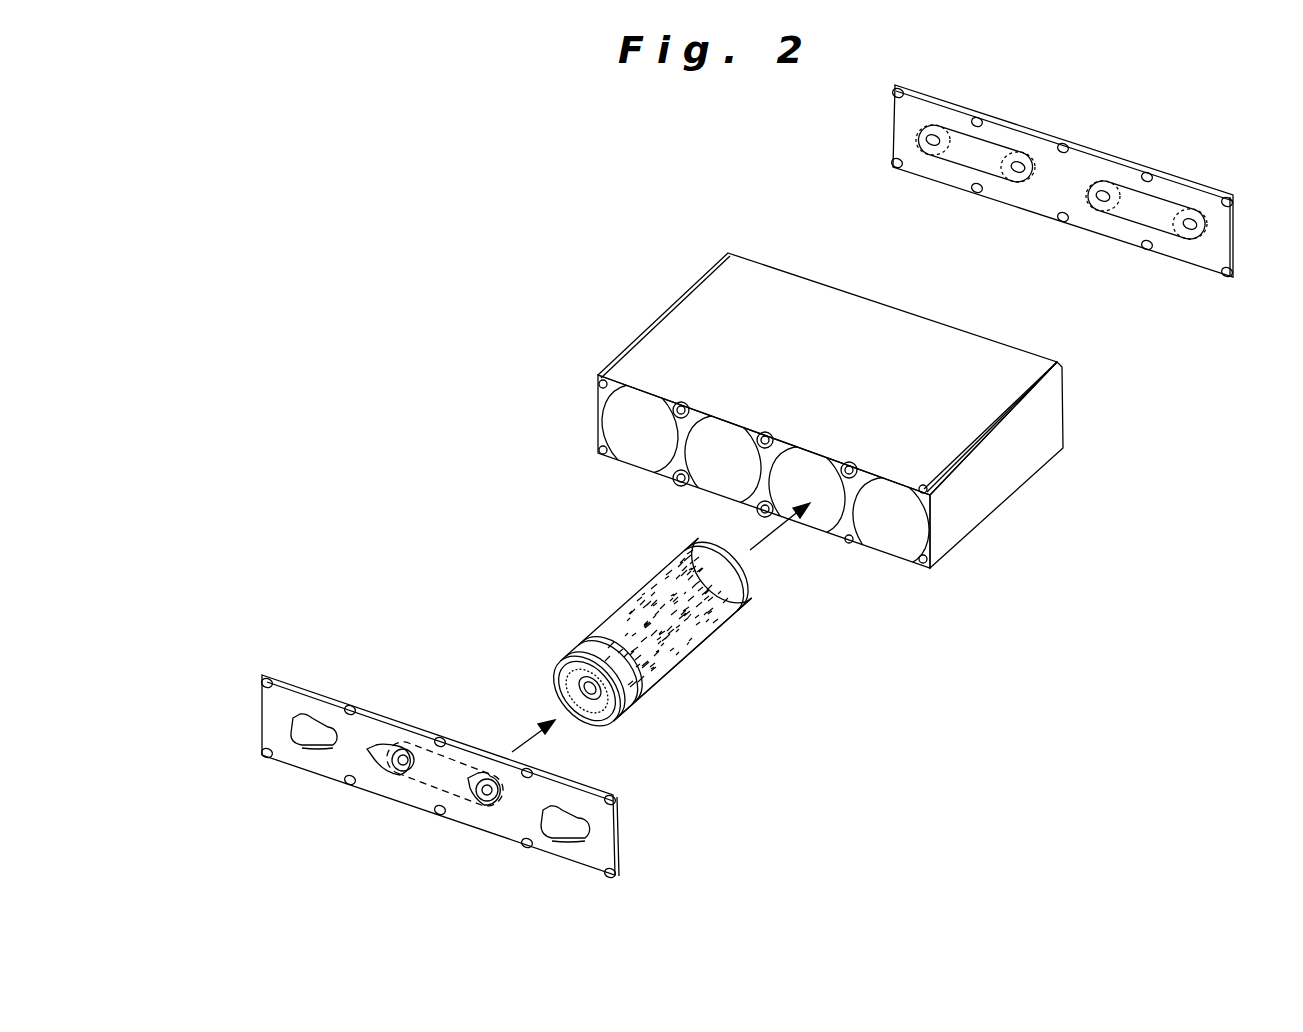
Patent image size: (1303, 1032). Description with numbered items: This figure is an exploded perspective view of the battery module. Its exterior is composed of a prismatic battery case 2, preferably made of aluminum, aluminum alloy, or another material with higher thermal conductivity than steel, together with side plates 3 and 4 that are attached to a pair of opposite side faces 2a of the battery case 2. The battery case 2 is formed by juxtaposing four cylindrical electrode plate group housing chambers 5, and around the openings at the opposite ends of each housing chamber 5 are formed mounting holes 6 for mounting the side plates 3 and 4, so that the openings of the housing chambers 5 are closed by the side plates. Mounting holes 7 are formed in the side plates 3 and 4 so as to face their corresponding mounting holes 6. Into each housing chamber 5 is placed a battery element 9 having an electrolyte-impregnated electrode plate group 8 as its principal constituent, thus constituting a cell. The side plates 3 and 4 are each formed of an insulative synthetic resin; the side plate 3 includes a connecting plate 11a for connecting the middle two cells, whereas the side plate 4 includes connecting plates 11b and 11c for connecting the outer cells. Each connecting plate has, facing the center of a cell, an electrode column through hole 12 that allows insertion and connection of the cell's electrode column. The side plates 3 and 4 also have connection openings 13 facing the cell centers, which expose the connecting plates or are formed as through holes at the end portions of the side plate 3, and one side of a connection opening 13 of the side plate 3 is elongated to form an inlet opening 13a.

The battery case 2 is at (678, 327).
The side faces 2a is at (1066, 386).
The side plate 3 is at (292, 690).
The side plate 4 is at (900, 110).
The electrode plate group housing chamber 5 is at (630, 446).
The mounting holes 6 is at (598, 450).
The mounting holes 7 is at (893, 168).
The electrode plate group 8 is at (640, 608).
The battery element 9 is at (688, 663).
The connecting plate 11a is at (427, 753).
The connecting plate 11b is at (960, 155).
The connecting plate 11c is at (1167, 224).
The electrode column through hole 12 is at (929, 140).
The connection opening 13 is at (307, 733).
The inlet opening 13a is at (327, 749).